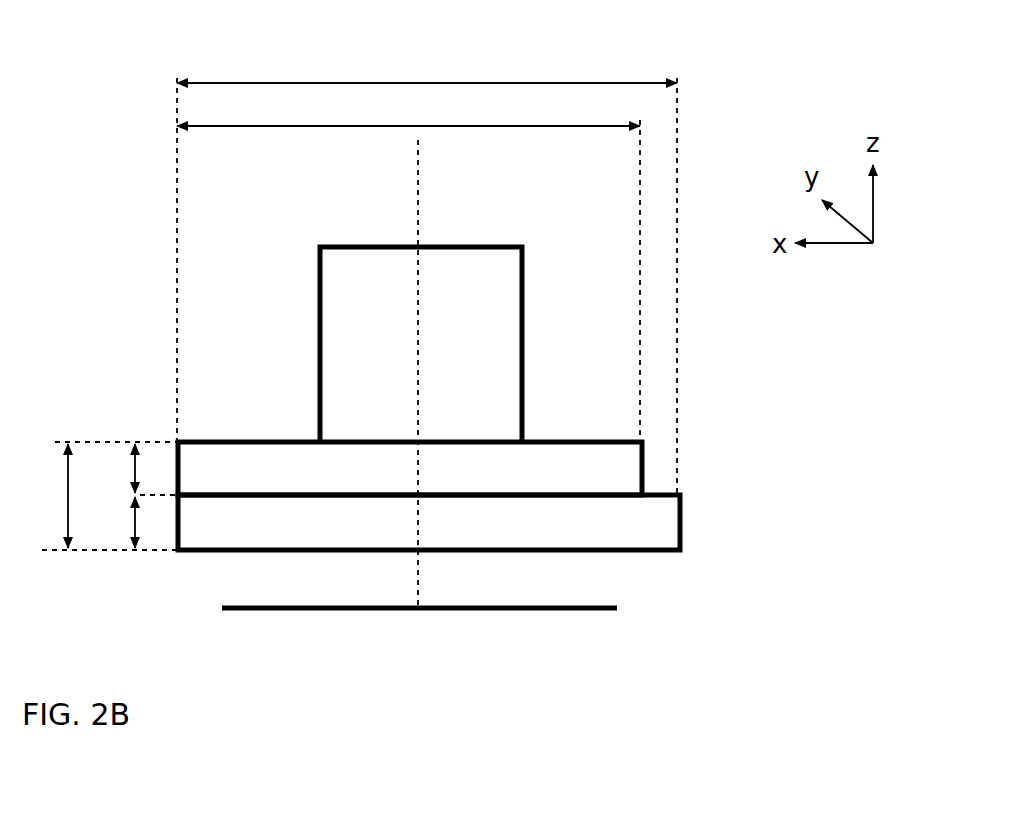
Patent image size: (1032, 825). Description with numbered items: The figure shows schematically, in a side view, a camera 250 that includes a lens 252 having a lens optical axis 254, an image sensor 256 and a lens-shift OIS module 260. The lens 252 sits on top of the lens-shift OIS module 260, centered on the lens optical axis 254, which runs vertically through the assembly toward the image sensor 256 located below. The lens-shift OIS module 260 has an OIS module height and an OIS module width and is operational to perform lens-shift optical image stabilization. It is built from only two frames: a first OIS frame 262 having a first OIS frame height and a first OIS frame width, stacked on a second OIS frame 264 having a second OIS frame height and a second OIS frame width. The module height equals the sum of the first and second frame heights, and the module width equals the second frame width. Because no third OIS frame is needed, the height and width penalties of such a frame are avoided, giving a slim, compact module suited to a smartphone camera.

The camera 250 is at (152, 176).
The lens 252 is at (528, 370).
The lens optical axis 254 is at (424, 200).
The image sensor 256 is at (625, 607).
The lens-shift OIS module 260 is at (545, 484).
The first OIS frame 262 is at (658, 460).
The second OIS frame 264 is at (686, 536).